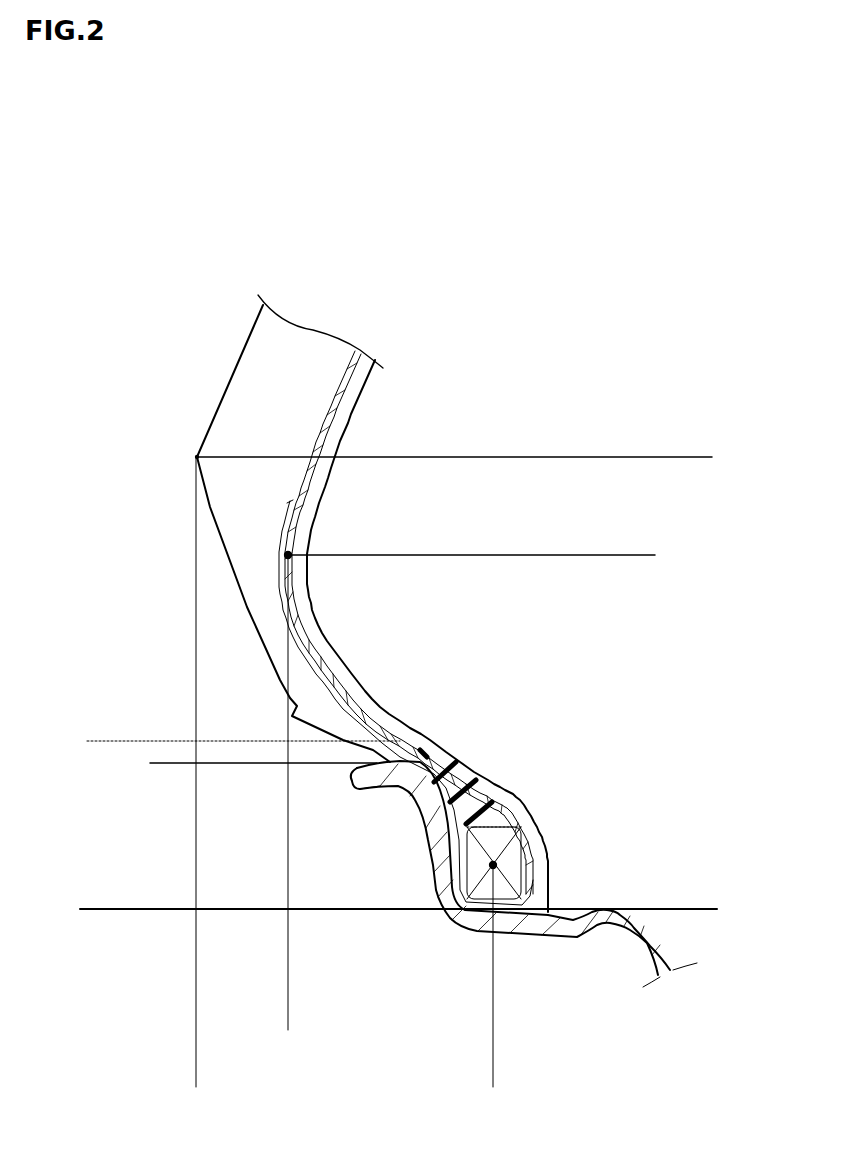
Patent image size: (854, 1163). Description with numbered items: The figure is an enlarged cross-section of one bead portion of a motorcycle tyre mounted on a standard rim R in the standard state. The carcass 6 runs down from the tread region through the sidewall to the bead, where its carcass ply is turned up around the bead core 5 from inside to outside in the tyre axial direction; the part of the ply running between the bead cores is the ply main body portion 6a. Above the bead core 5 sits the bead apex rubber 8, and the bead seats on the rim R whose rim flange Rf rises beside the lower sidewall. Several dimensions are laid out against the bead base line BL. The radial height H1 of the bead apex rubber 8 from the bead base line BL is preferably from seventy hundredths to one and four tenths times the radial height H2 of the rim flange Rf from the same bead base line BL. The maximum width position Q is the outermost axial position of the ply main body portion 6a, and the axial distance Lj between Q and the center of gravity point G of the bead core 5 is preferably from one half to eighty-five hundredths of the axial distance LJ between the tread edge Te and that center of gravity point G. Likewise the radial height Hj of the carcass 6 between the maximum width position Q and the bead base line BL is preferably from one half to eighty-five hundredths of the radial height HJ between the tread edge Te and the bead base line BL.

The carcass 6 is at (406, 628).
The ply main body portion 6a is at (345, 397).
The bead core 5 is at (508, 850).
The bead apex rubber 8 is at (457, 782).
The center of gravity point G is at (497, 865).
The maximum width position Q is at (290, 554).
The tread edge Te is at (196, 457).
The standard rim R is at (638, 938).
The rim flange Rf is at (417, 807).
The bead base line BL is at (360, 912).
The height between tread edge and bead base line HJ is at (706, 458).
The height of carcass between maximum width position and bead base line Hj is at (651, 556).
The height of bead apex rubber H1 is at (92, 742).
The height of rim flange H2 is at (155, 764).
The distance between tread edge and center of gravity point LJ is at (480, 1086).
The distance between maximum width position and center of gravity point Lj is at (480, 1029).